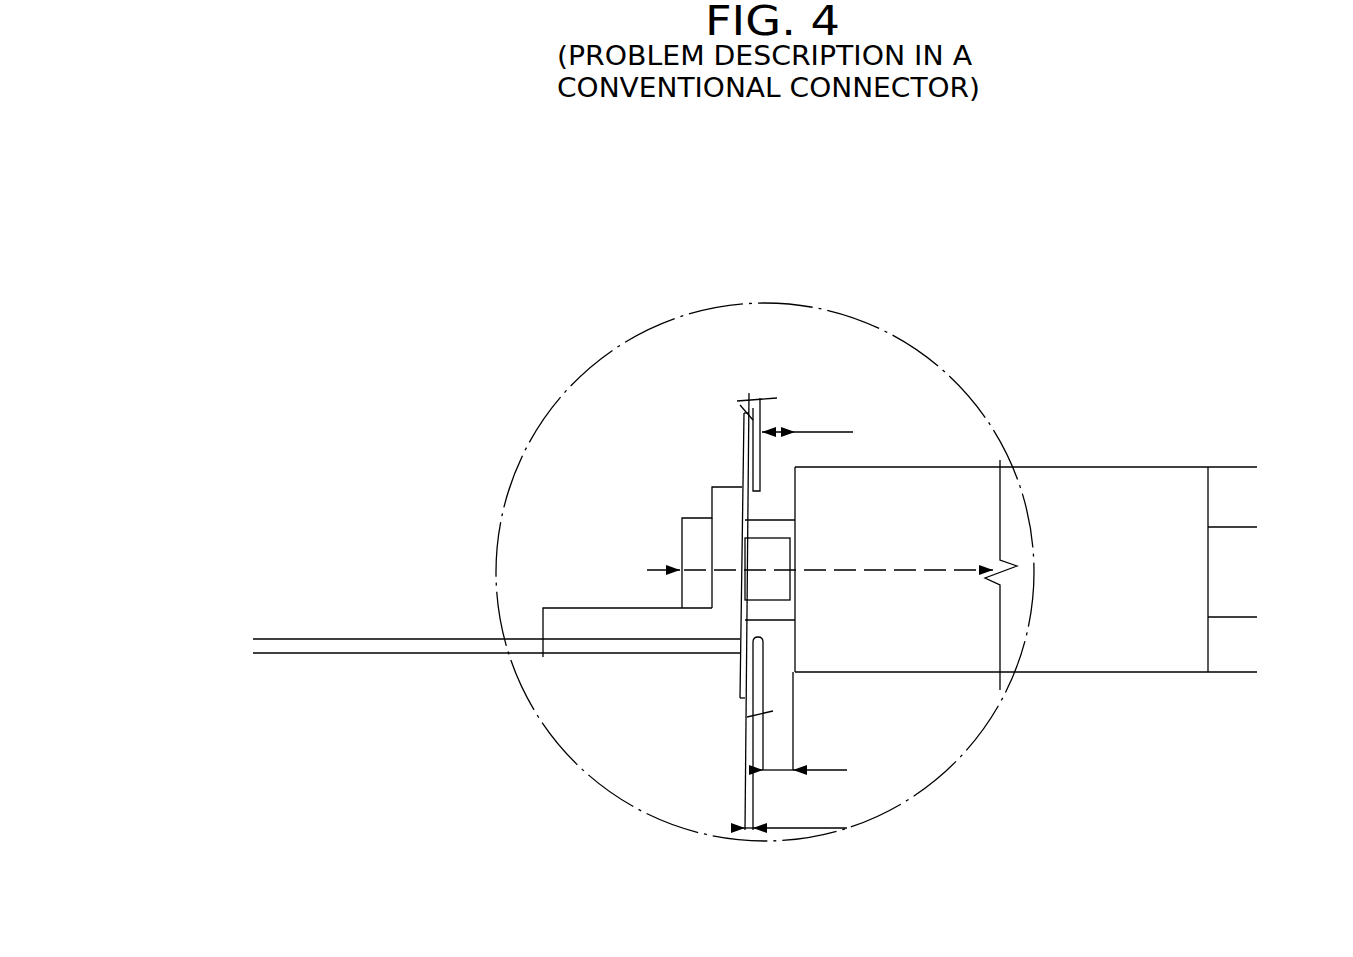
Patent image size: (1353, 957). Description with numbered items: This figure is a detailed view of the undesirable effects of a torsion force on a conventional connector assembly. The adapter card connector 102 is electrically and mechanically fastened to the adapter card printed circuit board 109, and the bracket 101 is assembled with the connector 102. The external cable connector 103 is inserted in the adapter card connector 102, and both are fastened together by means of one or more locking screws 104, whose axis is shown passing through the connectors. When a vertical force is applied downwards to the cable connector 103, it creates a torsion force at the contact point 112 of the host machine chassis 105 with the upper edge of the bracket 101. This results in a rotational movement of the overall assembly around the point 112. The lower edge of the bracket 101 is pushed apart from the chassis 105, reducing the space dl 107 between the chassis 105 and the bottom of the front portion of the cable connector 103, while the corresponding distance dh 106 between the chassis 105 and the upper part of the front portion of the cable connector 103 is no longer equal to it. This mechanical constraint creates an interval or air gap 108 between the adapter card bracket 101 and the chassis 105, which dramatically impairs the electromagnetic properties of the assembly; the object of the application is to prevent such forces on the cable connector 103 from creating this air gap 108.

The bracket 101 is at (512, 611).
The adapter card connector 102 is at (504, 458).
The cable connector 103 is at (1001, 615).
The locking screws 104 is at (615, 497).
The host machine chassis 105 is at (992, 532).
The dh 106 is at (844, 419).
The dl 107 is at (831, 759).
The air gap 108 is at (835, 815).
The adapter card printed circuit board 109 is at (496, 612).
The contact point 112 is at (898, 352).